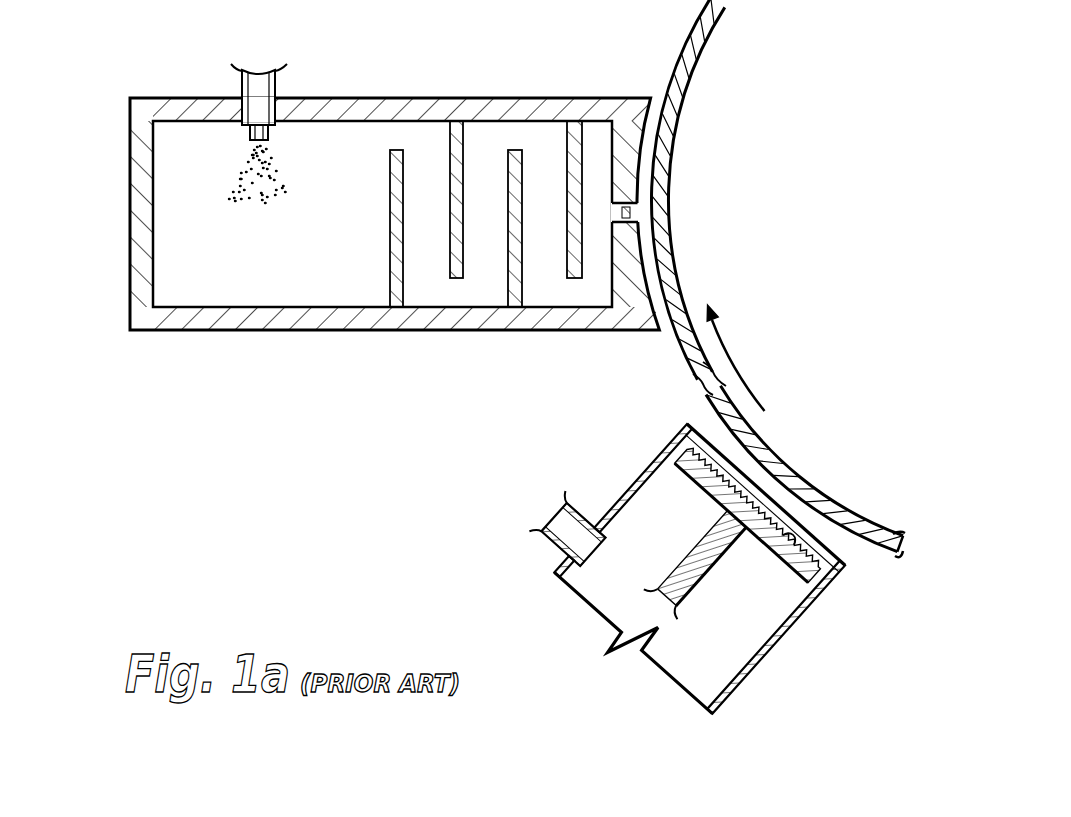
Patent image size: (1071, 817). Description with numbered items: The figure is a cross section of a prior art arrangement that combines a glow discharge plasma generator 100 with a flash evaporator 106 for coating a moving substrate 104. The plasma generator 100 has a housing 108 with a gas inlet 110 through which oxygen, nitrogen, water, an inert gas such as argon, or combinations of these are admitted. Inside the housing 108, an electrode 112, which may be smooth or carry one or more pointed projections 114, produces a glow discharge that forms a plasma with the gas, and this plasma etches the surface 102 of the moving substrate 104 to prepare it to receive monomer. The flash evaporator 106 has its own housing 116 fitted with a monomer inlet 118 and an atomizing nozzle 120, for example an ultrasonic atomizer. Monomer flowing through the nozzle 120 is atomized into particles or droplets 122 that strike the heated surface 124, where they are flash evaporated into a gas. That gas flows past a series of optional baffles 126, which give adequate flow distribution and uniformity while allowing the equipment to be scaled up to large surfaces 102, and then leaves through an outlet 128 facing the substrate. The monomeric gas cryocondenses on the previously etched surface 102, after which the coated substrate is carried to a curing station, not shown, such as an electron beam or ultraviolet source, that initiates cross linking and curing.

The plasma generator 100 is at (637, 554).
The surface 102 is at (722, 426).
The moving substrate 104 is at (815, 483).
The flash evaporator 106 is at (110, 222).
The housing 108 is at (634, 479).
The gas inlet 110 is at (550, 530).
The electrode 112 is at (698, 557).
The pointed projections 114 is at (790, 566).
The housing 116 is at (374, 98).
The monomer inlet 118 is at (244, 96).
The atomizing nozzle 120 is at (288, 152).
The particles or droplets 122 is at (240, 211).
The heated surface 124 is at (250, 307).
The baffles 126 is at (450, 145).
The outlet 128 is at (602, 214).